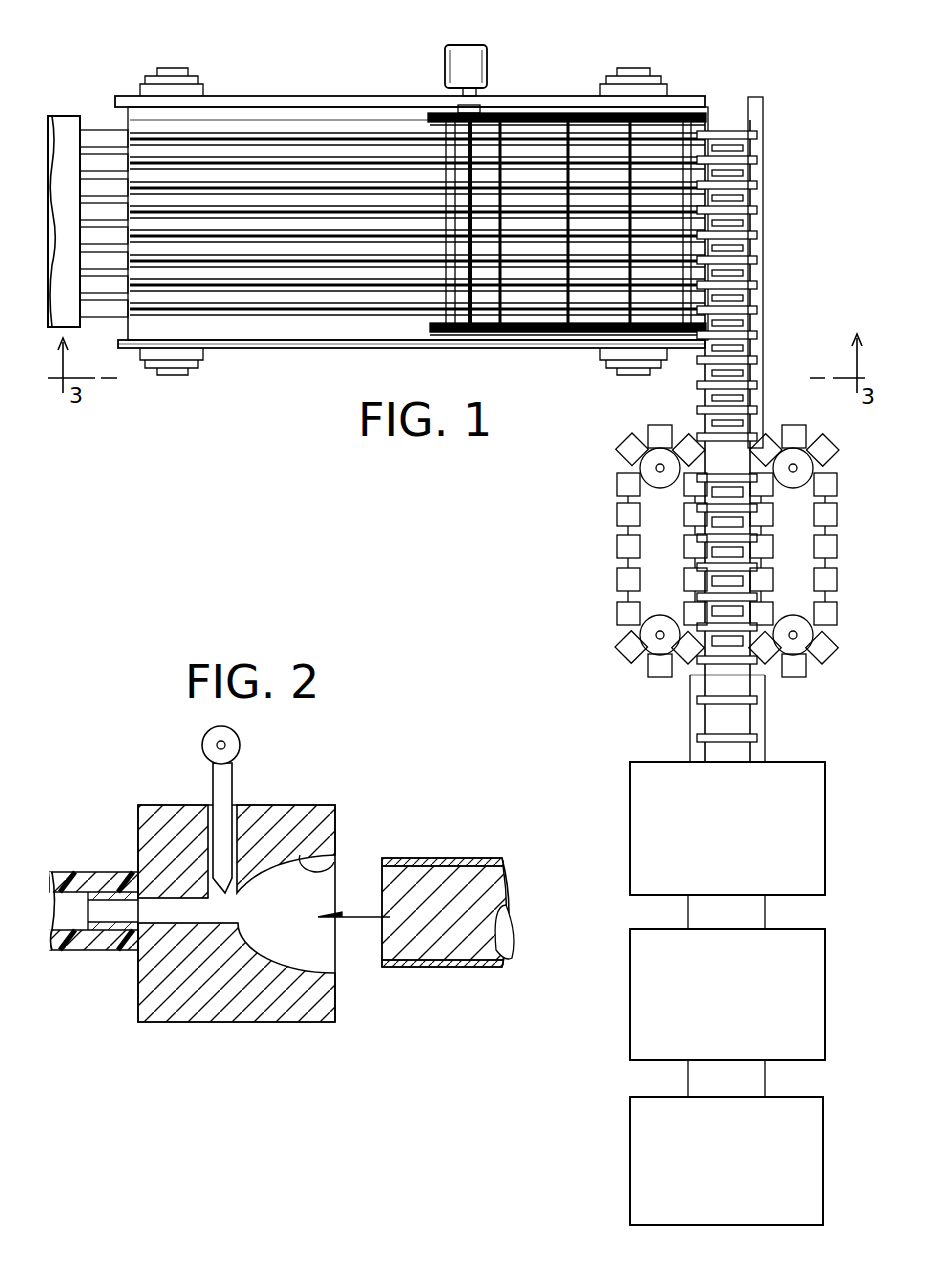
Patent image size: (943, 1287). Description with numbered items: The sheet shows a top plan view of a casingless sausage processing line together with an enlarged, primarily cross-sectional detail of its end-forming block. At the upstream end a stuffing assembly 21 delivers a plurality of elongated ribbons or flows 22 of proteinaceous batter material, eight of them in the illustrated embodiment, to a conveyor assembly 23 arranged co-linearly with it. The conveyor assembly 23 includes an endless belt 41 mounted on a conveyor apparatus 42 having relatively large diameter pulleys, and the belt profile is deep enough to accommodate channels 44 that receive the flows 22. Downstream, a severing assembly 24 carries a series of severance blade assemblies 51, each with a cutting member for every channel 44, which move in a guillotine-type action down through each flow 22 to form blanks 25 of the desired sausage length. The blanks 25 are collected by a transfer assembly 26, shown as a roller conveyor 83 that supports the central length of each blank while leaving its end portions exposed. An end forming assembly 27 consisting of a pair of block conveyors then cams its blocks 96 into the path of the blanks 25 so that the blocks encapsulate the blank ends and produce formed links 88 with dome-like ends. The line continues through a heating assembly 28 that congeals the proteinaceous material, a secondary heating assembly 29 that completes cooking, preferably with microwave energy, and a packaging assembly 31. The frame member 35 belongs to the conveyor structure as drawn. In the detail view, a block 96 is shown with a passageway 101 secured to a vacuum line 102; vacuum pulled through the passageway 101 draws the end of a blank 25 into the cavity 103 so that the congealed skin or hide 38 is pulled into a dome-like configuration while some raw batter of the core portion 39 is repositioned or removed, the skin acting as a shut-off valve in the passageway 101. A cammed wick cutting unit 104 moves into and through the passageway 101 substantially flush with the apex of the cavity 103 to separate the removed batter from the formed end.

In FIG. 1, the stuffing assembly 21 is at (63, 112).
In FIG. 1, the elongated flow of proteinaceous batter material 22 is at (220, 265).
In FIG. 1, the conveyor assembly 23 is at (272, 96).
In FIG. 1, the severing assembly 24 is at (552, 213).
In FIG. 1, the blank 25 is at (755, 140).
In FIG. 2, the blank 25 is at (424, 915).
In FIG. 1, the transfer assembly 26 is at (701, 429).
In FIG. 1, the end forming assembly 27 is at (603, 551).
In FIG. 1, the heating assembly 28 is at (727, 828).
In FIG. 1, the secondary heating assembly 29 is at (727, 994).
In FIG. 1, the packaging assembly 31 is at (726, 1161).
In FIG. 1, the frame side member 35 is at (133, 308).
In FIG. 2, the skin or hide 38 is at (440, 967).
In FIG. 2, the core portion 39 is at (490, 967).
In FIG. 1, the endless belt 41 is at (368, 325).
In FIG. 1, the conveyor apparatus 42 is at (493, 345).
In FIG. 1, the channel 44 is at (320, 130).
In FIG. 1, the severance blade assembly 51 is at (440, 297).
In FIG. 1, the roller conveyor 83 is at (758, 225).
In FIG. 1, the formed link 88 is at (760, 738).
In FIG. 2, the block 96 is at (215, 1012).
In FIG. 2, the passageway 101 is at (178, 923).
In FIG. 2, the vacuum line 102 is at (85, 877).
In FIG. 2, the cavity 103 is at (336, 870).
In FIG. 2, the wick cutting unit 104 is at (222, 780).